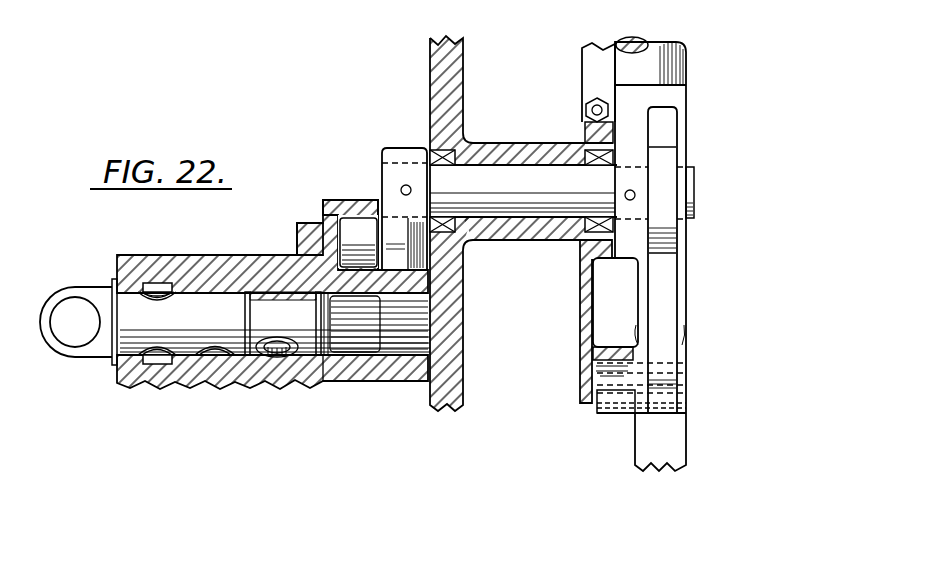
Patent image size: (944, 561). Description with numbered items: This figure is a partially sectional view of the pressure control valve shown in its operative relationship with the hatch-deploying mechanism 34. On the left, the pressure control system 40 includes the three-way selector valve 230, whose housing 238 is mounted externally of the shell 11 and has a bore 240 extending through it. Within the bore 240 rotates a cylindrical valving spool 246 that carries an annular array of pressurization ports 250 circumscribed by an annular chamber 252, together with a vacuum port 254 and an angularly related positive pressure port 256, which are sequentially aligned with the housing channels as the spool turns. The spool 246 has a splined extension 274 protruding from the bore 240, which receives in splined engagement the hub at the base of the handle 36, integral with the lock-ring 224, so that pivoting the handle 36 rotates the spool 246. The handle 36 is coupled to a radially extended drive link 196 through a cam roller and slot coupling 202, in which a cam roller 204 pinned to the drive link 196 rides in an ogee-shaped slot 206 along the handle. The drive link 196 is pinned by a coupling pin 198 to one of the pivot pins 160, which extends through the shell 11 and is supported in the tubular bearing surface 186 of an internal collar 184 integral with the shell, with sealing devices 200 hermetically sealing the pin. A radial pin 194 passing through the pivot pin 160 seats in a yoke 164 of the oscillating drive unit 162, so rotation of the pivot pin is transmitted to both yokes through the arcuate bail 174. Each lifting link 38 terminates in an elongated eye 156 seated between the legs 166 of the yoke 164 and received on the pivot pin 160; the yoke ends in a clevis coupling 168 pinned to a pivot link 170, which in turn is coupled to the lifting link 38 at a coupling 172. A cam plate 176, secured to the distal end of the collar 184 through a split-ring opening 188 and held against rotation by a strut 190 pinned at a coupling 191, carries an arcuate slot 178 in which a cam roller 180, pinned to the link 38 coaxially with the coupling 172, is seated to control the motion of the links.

The shell 11 is at (440, 60).
The hatch-deployment mechanism 34 is at (343, 150).
The handle 36 is at (378, 380).
The lifting links 38 is at (663, 450).
The pressure control system 40 is at (116, 249).
The elongated eye 156 is at (665, 150).
The pivot pins 160 is at (690, 190).
The oscillating drive unit 162 is at (693, 281).
The yokes 164 is at (680, 267).
The legs 166 is at (640, 308).
The clevis coupling 168 is at (680, 373).
The pivot link 170 is at (660, 393).
The coupling 172 is at (680, 404).
The arcuate bail 174 is at (682, 72).
The cam plates 176 is at (591, 298).
The arcuate slot 178 is at (597, 366).
The cam roller 180 is at (612, 413).
The collars 184 is at (533, 228).
The tubular bearing surface 186 is at (510, 172).
The openings 188 is at (574, 237).
The strut 190 is at (592, 62).
The coupling 191 is at (597, 104).
The pins 194 is at (636, 192).
The drive link 196 is at (381, 212).
The coupling pin 198 is at (405, 184).
The sealing devices 200 is at (466, 143).
The cam roller and slot coupling 202 is at (318, 206).
The cam roller 204 is at (332, 214).
The slot 206 is at (352, 226).
The lock-ring 224 is at (430, 285).
The three-way selector valve 230 is at (213, 247).
The housing 238 is at (145, 263).
The bore 240 is at (220, 297).
The valving spool 246 is at (172, 330).
The pressurization ports 250 is at (153, 298).
The annular chamber 252 is at (155, 360).
The vacuum port 254 is at (215, 358).
The positive pressure port 256 is at (279, 357).
The splined extension 274 is at (377, 330).